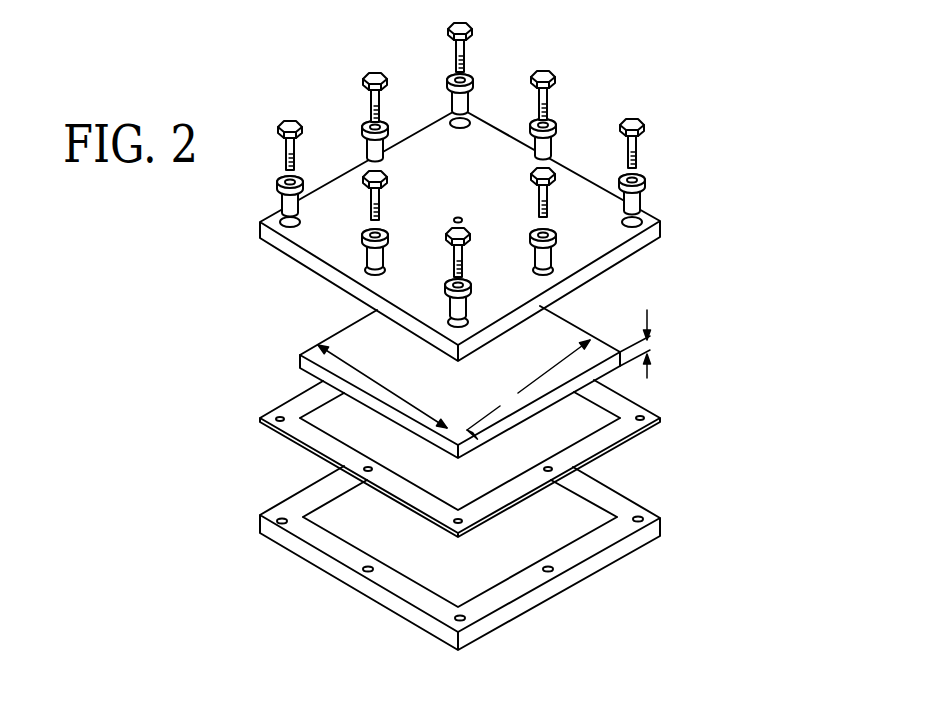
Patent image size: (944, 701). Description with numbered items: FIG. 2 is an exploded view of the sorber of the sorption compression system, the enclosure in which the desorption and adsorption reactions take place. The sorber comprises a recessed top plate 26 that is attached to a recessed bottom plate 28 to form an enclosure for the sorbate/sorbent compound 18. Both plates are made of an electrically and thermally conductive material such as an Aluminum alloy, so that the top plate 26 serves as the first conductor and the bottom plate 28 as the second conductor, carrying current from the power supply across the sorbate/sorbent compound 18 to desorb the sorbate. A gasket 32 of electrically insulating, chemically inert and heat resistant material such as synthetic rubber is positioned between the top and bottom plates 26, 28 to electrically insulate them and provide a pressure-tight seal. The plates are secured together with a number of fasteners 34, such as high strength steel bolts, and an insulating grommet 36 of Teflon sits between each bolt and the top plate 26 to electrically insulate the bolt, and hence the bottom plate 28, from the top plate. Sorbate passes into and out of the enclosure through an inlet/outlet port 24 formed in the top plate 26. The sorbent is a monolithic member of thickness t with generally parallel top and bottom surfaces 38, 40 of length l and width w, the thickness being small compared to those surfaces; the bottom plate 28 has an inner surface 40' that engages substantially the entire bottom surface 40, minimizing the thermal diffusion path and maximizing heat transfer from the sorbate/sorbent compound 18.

The sorbate/sorbent compound 18 is at (322, 327).
The inlet/outlet port 24 is at (459, 216).
The top plate 26 is at (662, 225).
The bottom plate 28 is at (662, 527).
The gasket 32 is at (618, 443).
The fasteners 34 is at (619, 120).
The insulating grommet 36 is at (365, 251).
The top surface 38 is at (566, 328).
The bottom surface 40 is at (493, 446).
The inner surface 40' is at (478, 543).